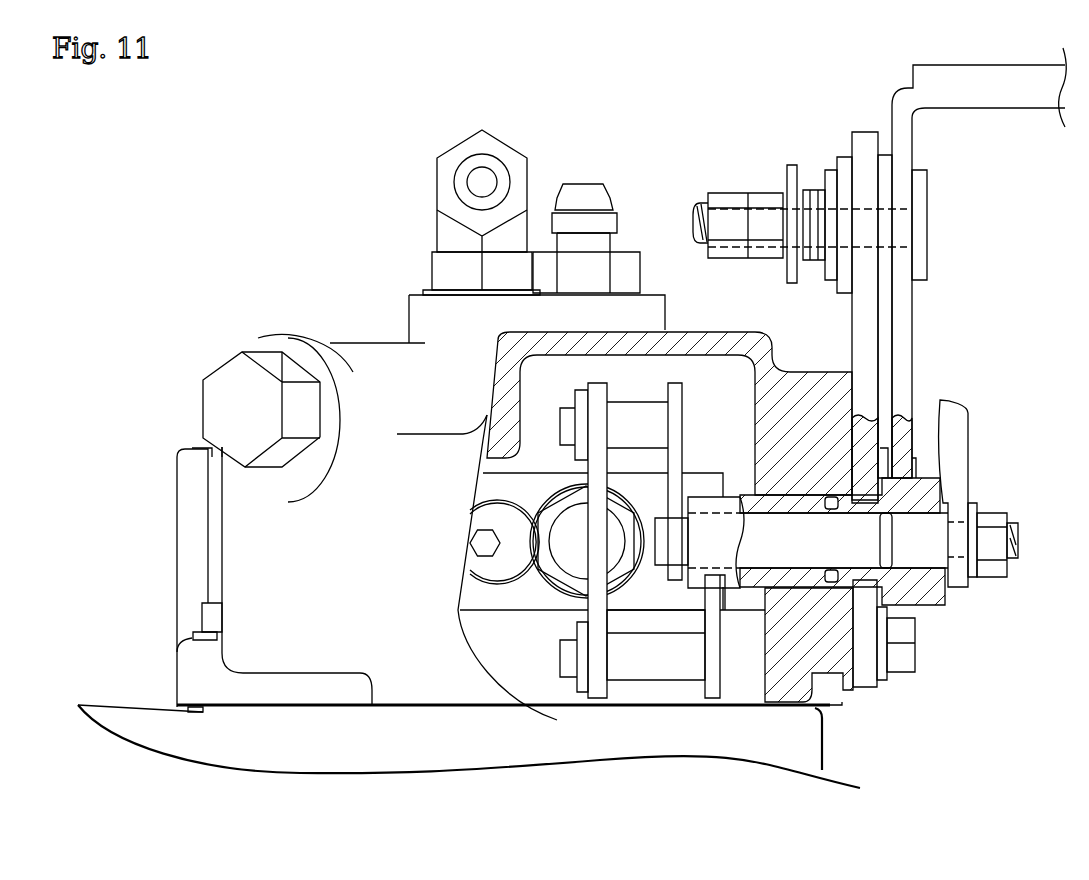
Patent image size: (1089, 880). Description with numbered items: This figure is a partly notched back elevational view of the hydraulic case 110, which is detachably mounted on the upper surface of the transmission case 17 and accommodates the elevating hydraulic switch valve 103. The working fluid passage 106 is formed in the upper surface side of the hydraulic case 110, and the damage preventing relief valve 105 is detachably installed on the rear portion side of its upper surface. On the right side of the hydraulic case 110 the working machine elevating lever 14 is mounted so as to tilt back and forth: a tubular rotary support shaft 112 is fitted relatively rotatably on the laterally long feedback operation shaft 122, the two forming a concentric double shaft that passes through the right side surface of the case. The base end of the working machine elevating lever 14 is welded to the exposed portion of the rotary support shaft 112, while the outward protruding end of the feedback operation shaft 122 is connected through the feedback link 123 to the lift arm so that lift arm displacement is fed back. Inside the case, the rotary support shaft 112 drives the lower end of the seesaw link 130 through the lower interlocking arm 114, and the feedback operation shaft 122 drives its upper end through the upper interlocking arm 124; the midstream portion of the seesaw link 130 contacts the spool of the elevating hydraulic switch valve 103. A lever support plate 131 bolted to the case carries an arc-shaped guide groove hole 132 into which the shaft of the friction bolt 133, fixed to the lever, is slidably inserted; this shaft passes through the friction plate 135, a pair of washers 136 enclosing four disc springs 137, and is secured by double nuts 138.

The working machine elevating lever 14 is at (907, 147).
The transmission case 17 is at (815, 740).
The elevating hydraulic switch valve 103 is at (527, 595).
The damage preventing relief valve 105 is at (237, 410).
The working fluid passage 106 is at (498, 182).
The hydraulic case 110 is at (445, 330).
The rotary support shaft 112 is at (947, 598).
The lower interlocking arm 114 is at (670, 672).
The feedback operation shaft 122 is at (903, 558).
The feedback link 123 is at (962, 480).
The upper interlocking arm 124 is at (767, 335).
The seesaw link 130 is at (600, 698).
The lever support plate 131 is at (863, 323).
The guide groove hole 132 is at (865, 197).
The friction bolt 133 is at (697, 220).
The friction plate 135 is at (842, 163).
The washers 136 is at (791, 163).
The disc springs 137 is at (807, 190).
The double nuts 138 is at (760, 193).